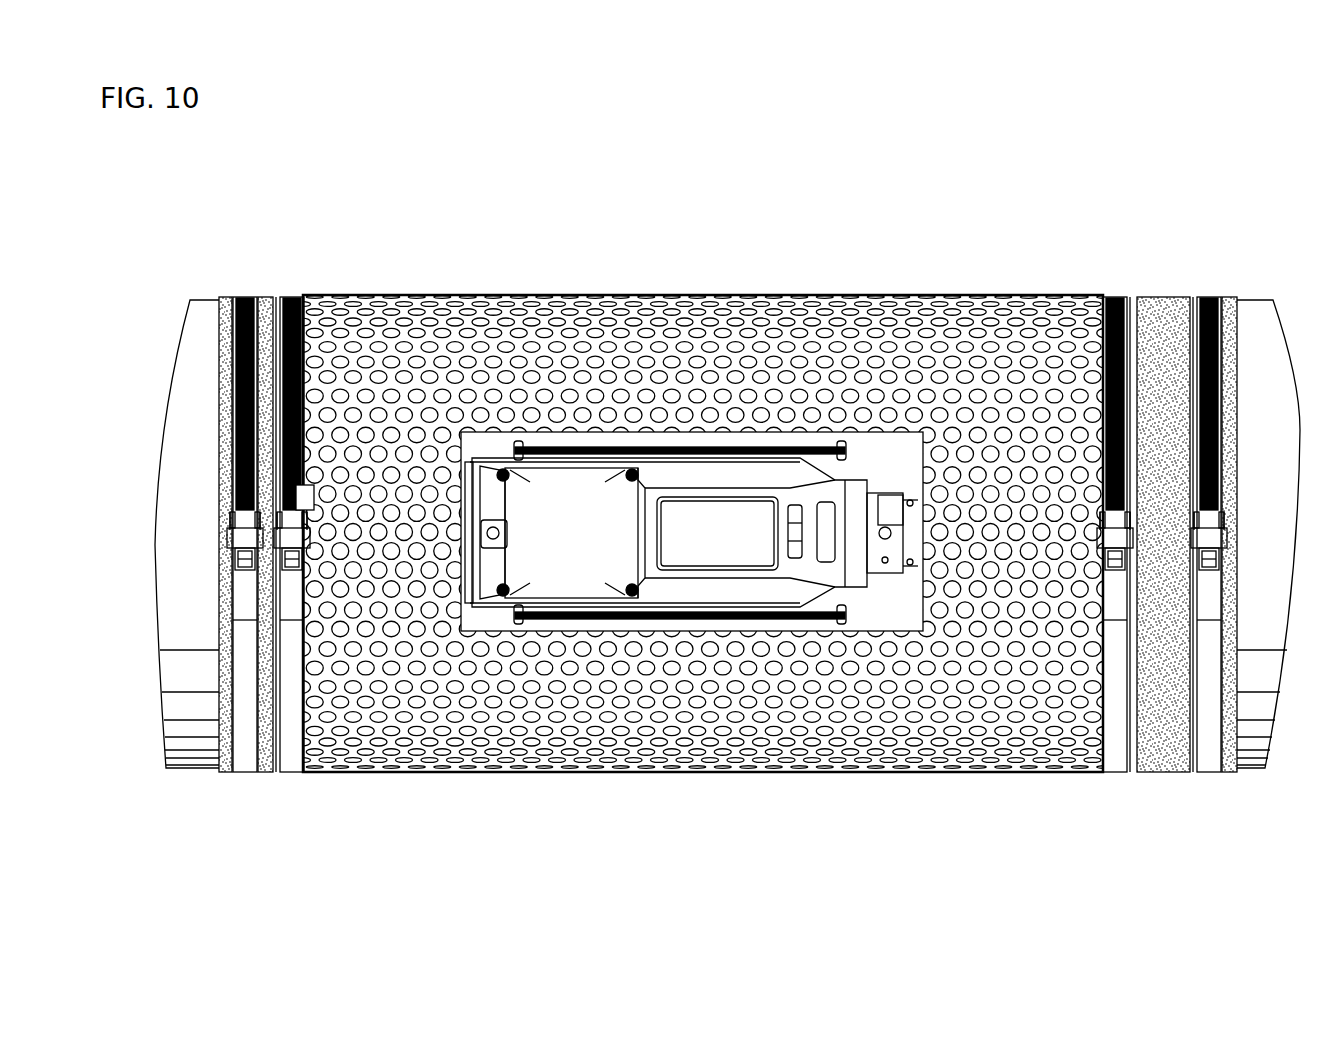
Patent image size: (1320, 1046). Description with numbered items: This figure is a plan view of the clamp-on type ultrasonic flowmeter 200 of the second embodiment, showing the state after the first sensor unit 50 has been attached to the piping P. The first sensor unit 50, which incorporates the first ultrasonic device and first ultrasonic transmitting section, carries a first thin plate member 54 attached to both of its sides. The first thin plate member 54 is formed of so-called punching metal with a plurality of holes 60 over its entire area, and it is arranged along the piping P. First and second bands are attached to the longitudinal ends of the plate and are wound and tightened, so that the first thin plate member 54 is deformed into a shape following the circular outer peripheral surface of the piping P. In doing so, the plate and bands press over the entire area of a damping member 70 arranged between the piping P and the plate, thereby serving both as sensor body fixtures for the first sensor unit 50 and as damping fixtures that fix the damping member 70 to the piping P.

The clamp-on type ultrasonic flowmeter 200 is at (1176, 208).
The first thin plate member 54 is at (974, 773).
The holes 60 is at (885, 396).
The first sensor unit 50 is at (695, 492).
The damping member 70 is at (1161, 320).
The piping P is at (189, 768).